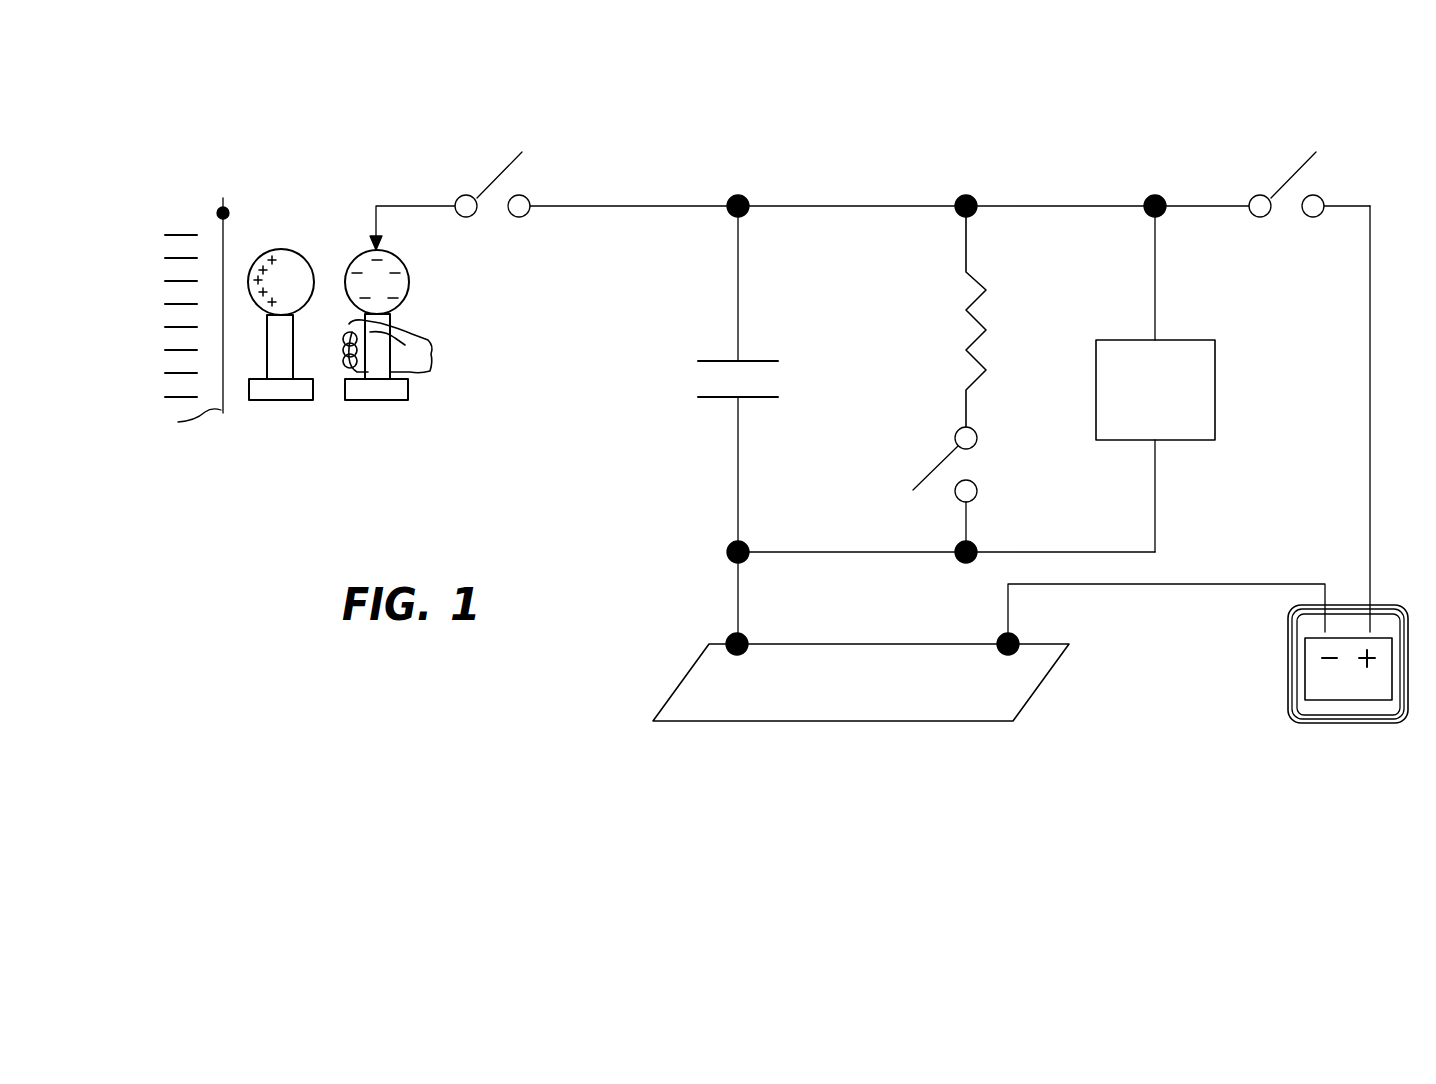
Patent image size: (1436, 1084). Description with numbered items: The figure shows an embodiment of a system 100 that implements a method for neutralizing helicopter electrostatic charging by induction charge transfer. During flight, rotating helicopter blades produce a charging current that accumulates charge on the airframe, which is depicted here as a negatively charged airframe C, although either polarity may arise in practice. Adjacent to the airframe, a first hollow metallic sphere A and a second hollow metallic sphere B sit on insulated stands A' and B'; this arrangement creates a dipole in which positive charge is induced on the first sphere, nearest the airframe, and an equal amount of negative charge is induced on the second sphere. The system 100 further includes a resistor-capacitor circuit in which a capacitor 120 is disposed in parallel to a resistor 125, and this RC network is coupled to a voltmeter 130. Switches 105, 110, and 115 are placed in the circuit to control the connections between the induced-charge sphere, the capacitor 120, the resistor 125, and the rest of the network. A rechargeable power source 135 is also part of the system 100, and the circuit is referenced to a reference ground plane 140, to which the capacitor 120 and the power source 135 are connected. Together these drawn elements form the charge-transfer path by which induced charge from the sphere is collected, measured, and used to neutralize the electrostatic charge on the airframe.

The system 100 is at (235, 143).
The switch 105 is at (502, 170).
The switch 110 is at (1293, 173).
The switch 115 is at (935, 470).
The capacitor 120 is at (698, 361).
The resistor 125 is at (986, 290).
The voltmeter 130 is at (1188, 340).
The rechargeable power source 135 is at (1348, 725).
The reference ground plane 140 is at (782, 722).